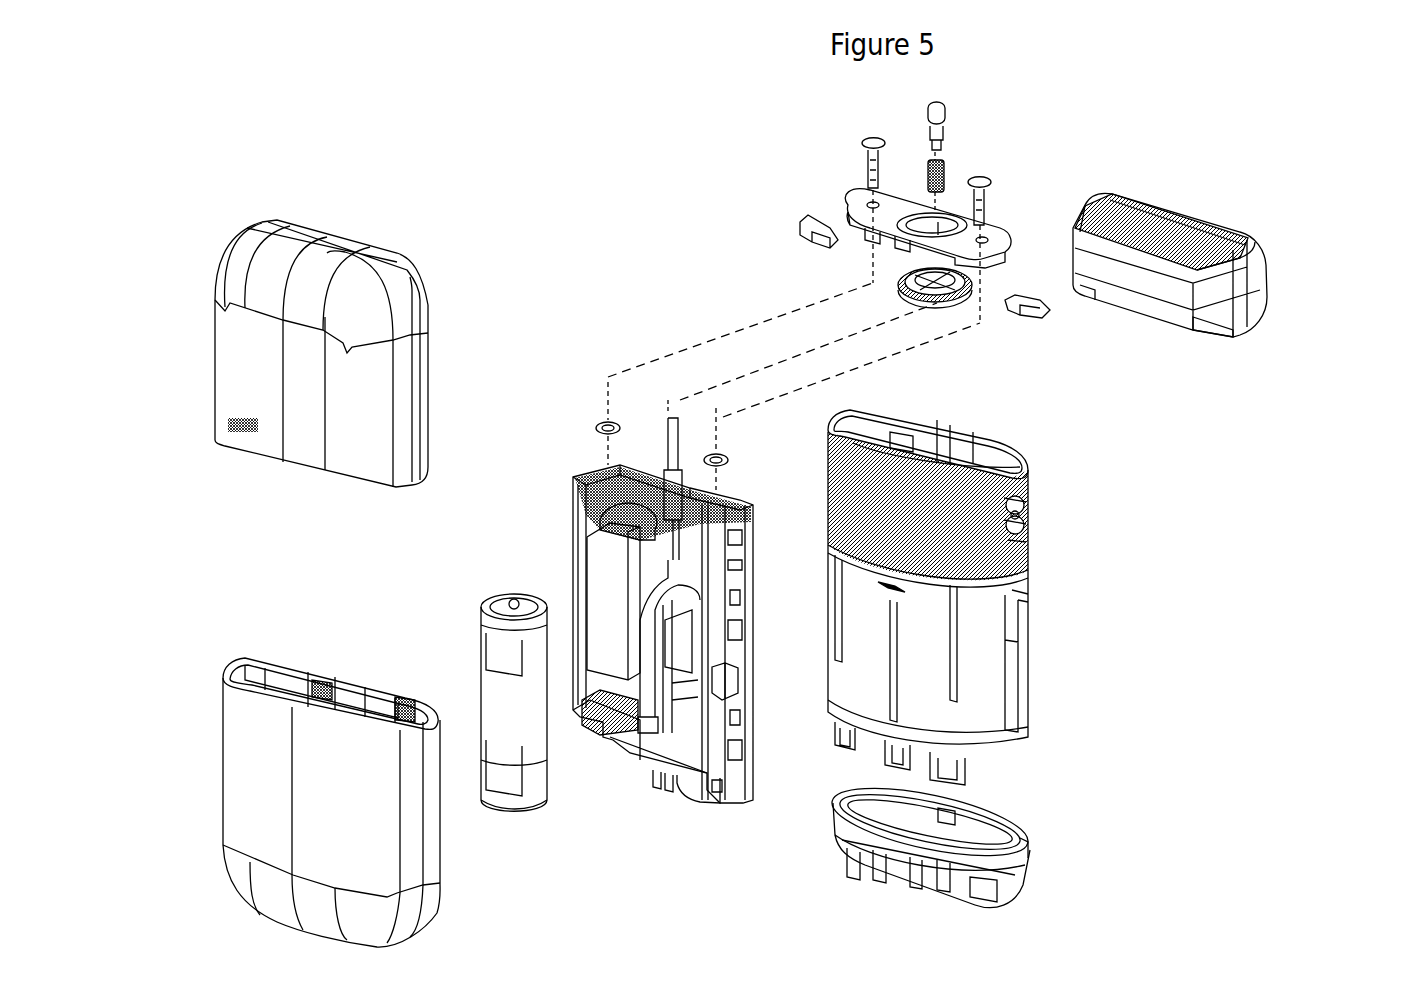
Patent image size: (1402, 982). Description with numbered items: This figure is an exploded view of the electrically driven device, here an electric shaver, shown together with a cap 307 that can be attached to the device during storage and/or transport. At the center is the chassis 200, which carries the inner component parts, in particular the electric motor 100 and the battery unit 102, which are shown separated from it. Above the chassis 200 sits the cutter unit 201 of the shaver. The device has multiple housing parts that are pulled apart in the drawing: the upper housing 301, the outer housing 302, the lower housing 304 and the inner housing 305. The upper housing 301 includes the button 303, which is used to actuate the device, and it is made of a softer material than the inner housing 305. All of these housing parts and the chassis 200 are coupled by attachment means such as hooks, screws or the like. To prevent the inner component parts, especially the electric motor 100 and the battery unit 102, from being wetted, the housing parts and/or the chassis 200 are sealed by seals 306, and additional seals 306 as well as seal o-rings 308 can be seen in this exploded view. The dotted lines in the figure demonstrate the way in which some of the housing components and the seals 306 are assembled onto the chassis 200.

The electric motor 100 is at (605, 600).
The battery unit 102 is at (505, 697).
The chassis 200 is at (553, 528).
The cutter unit 201 is at (1195, 208).
The upper housing 301 is at (1027, 488).
The outer housing 302 is at (252, 818).
The button 303 is at (1027, 537).
The lower housing 304 is at (862, 862).
The inner housing 305 is at (975, 690).
The seal 306 is at (958, 300).
The cap 307 is at (252, 378).
The seal/o-rings 308 is at (628, 430).